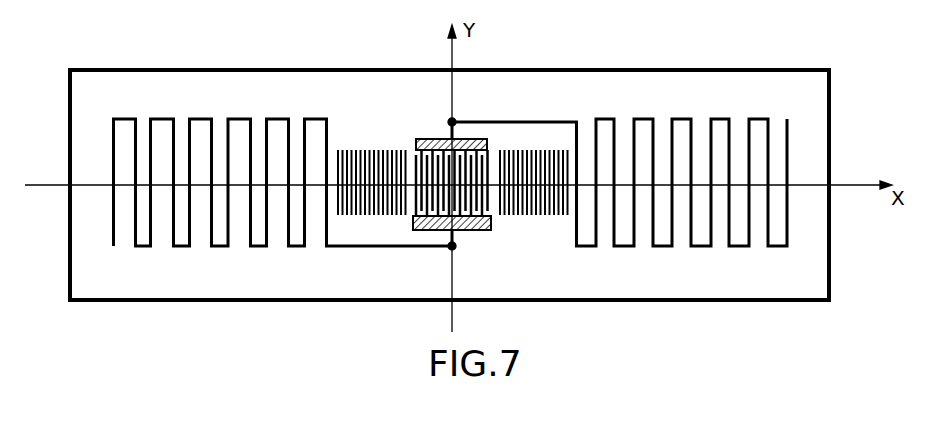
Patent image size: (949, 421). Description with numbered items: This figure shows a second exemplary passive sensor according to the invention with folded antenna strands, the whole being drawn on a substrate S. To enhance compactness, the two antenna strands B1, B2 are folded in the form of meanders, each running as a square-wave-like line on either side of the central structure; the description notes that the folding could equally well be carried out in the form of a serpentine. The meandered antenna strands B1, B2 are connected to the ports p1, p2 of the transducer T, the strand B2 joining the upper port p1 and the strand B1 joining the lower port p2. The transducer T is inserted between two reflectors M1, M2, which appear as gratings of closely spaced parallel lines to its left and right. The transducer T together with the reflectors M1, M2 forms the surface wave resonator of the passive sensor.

The piezoelectric substrate S is at (383, 95).
The antenna strand B1 is at (237, 119).
The antenna strand B2 is at (681, 119).
The reflector M1 is at (365, 215).
The reflector M2 is at (530, 215).
The transducer T is at (472, 230).
The port p1 is at (452, 122).
The port p2 is at (452, 246).